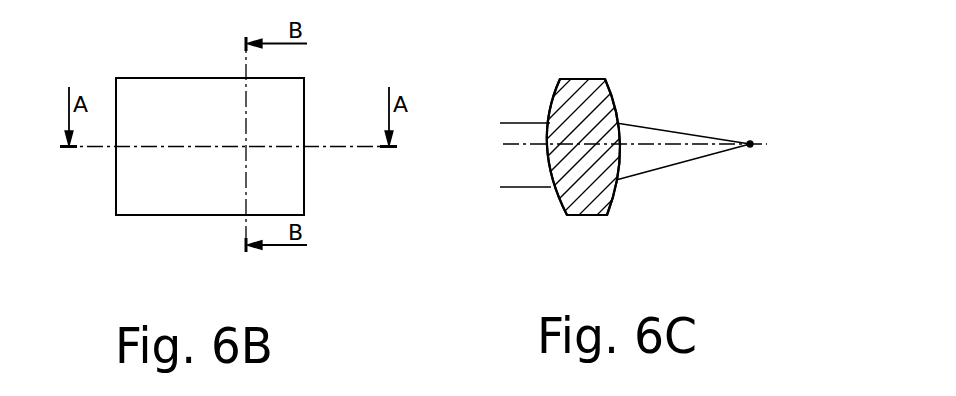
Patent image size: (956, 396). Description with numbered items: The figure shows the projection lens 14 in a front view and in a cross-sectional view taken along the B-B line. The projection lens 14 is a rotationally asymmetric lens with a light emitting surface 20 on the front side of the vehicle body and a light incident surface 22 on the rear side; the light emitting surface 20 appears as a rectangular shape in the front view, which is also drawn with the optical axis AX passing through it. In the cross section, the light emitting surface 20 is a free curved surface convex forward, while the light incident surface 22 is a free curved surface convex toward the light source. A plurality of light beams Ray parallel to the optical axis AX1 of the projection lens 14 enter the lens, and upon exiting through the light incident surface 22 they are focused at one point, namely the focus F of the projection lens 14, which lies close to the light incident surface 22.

In FIG. 6B, the projection lens 14 is at (164, 78).
In FIG. 6C, the projection lens 14 is at (584, 79).
In FIG. 6B, the light emitting surface 20 is at (182, 205).
In FIG. 6C, the light emitting surface 20 is at (549, 116).
In FIG. 6C, the light incident surface 22 is at (615, 104).
In FIG. 6B, the optical axis AX is at (201, 150).
In FIG. 6C, the optical axis AX1 is at (505, 143).
In FIG. 6C, the focus F is at (750, 141).
In FIG. 6C, the light beams Ray is at (527, 124).